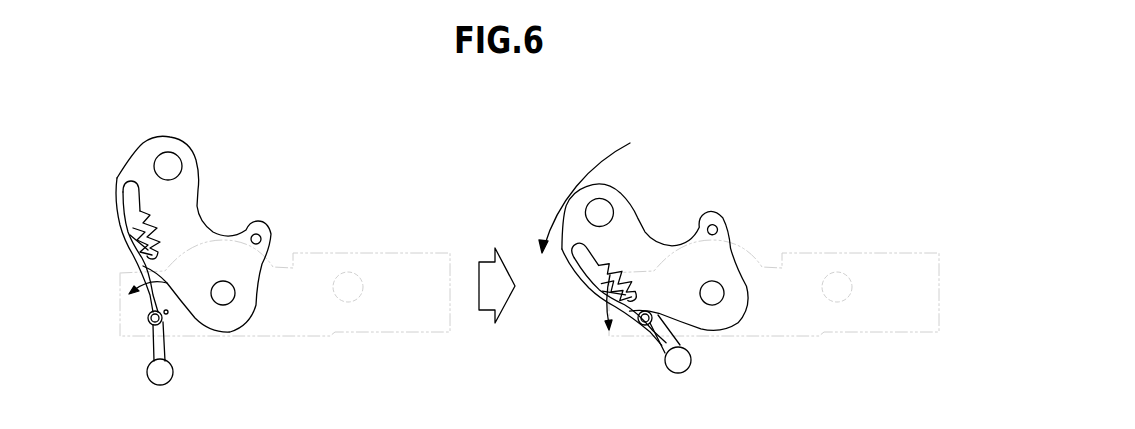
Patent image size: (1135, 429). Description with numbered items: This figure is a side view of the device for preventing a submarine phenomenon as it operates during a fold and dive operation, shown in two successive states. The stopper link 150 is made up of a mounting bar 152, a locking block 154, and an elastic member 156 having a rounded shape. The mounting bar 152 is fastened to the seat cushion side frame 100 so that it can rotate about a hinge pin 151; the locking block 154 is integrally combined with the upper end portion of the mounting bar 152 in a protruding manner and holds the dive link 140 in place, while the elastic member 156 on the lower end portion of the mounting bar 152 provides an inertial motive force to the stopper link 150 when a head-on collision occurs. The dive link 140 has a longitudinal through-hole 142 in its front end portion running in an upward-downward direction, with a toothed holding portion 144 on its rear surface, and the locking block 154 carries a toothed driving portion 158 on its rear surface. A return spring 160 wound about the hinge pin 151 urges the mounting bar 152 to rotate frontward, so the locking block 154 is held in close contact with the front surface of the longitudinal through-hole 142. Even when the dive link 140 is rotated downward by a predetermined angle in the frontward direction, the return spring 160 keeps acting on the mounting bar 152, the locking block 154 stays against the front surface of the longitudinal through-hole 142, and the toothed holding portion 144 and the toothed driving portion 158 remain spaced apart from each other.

The seat cushion side frame 100 is at (330, 252).
The dive link 140 is at (205, 176).
The longitudinal through-hole 142 is at (125, 196).
The toothed holding portion 144 is at (152, 217).
The stopper link 150 is at (173, 361).
The hinge pin 151 is at (152, 325).
The mounting bar 152 is at (166, 322).
The locking block 154 is at (133, 262).
The elastic member 156 is at (156, 372).
The toothed driving portion 158 is at (145, 232).
The return spring 160 is at (150, 308).